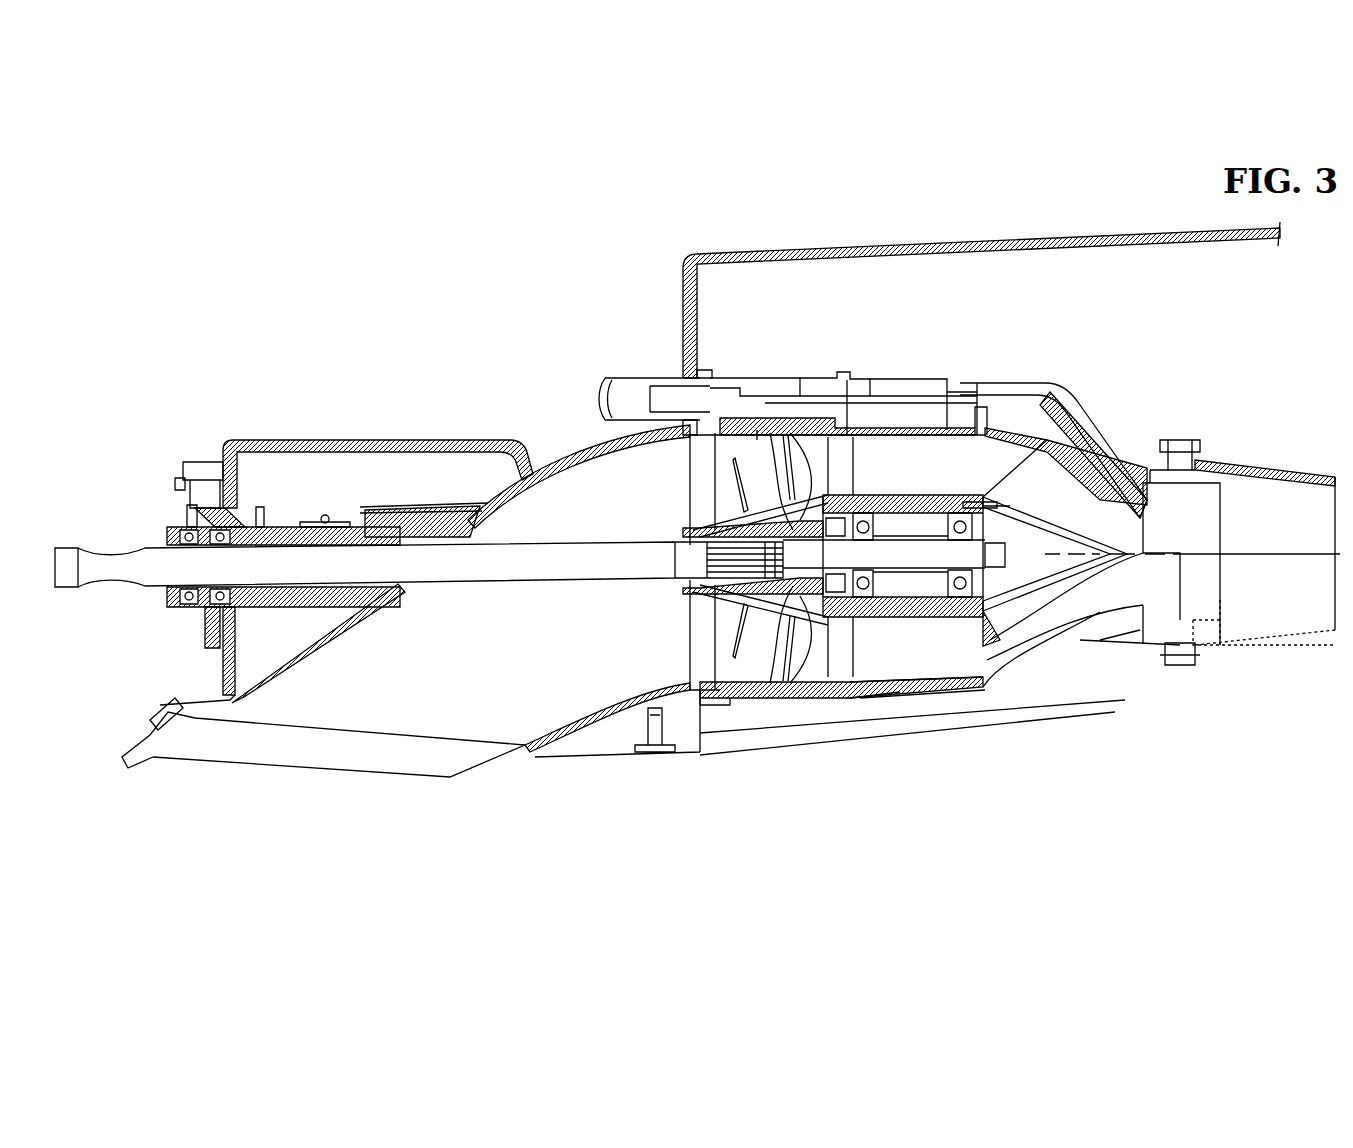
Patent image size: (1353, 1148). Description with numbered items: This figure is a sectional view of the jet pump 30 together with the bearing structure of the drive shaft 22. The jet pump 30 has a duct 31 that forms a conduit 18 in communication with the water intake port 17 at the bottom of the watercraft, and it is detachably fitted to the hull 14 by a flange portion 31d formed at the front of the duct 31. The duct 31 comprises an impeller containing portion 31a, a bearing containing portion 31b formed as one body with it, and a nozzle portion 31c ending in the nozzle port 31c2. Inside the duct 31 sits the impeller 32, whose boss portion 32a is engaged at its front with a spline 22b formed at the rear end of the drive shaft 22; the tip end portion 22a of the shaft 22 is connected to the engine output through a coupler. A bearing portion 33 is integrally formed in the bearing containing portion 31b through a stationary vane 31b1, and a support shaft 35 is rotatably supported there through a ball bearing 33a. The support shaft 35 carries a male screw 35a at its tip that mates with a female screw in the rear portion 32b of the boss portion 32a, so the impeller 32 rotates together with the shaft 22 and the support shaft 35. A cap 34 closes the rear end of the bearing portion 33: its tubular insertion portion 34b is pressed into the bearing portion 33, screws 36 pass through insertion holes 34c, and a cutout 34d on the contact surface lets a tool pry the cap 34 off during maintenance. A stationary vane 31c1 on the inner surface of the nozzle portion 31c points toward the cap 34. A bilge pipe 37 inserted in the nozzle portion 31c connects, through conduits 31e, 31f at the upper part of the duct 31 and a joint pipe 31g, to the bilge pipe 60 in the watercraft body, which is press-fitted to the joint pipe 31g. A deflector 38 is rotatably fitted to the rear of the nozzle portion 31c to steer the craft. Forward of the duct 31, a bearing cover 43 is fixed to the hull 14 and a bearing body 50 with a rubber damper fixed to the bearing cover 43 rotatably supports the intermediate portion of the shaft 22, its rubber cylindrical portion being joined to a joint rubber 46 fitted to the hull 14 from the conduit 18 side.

The hull 14 is at (588, 440).
The water intake port 17 is at (272, 735).
The conduit 18 is at (502, 645).
The drive shaft 22 is at (563, 573).
The tip end portion 22a is at (78, 545).
The spline 22b is at (723, 540).
The jet pump 30 is at (913, 709).
The duct 31 is at (848, 710).
The impeller containing portion 31a is at (740, 695).
The bearing containing portion 31b is at (883, 682).
The stationary vane 31b1 is at (928, 690).
The nozzle portion 31c is at (1125, 645).
The stationary vane 31c1 is at (1013, 457).
The nozzle port 31c2 is at (1220, 518).
The flange portion 31d is at (700, 370).
The conduit 31e is at (878, 403).
The conduit 31f is at (808, 398).
The joint pipe 31g is at (683, 372).
The impeller 32 is at (800, 648).
The boss portion 32a is at (713, 600).
The rear portion 32b is at (800, 492).
The bearing portion 33 is at (880, 618).
The ball bearing 33a is at (965, 650).
The cap 34 is at (1018, 610).
The insertion portion 34b is at (990, 628).
The insertion hole 34c is at (1003, 503).
The cutout 34d is at (1005, 632).
The support shaft 35 is at (887, 553).
The male screw 35a is at (757, 430).
The screw 36 is at (1010, 505).
The bilge pipe 37 is at (1068, 392).
The deflector 38 is at (1262, 472).
The bearing cover 43 is at (305, 438).
The joint rubber 46 is at (490, 518).
The bearing body 50 is at (178, 637).
The bilge pipe 60 is at (622, 378).